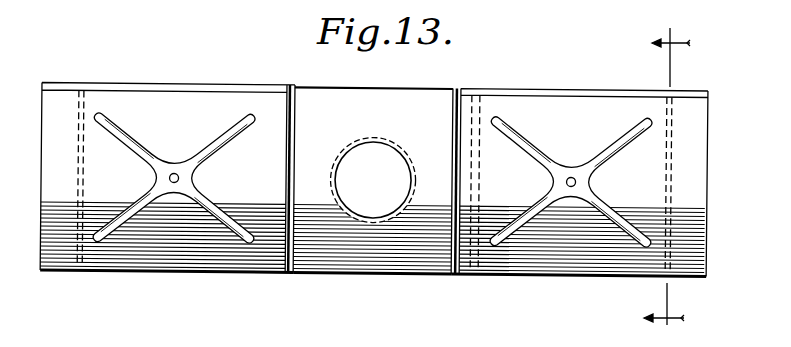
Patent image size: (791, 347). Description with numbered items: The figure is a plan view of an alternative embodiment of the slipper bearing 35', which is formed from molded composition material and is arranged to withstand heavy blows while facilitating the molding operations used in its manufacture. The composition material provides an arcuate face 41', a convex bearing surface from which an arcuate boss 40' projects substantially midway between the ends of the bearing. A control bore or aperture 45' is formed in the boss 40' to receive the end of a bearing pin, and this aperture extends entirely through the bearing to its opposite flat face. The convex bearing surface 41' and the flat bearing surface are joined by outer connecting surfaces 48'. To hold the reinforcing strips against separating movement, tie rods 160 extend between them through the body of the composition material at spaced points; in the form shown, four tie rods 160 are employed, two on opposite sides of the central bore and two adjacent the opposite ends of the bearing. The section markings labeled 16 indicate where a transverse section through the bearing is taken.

The outer connecting surface 48' is at (167, 189).
The slipper bearing 35' is at (579, 165).
The arcuate boss 40' is at (373, 204).
The arcuate face 41' is at (372, 260).
The tie rod 160 is at (86, 167).
The control bore 45' is at (383, 168).
The section line 16 is at (672, 177).